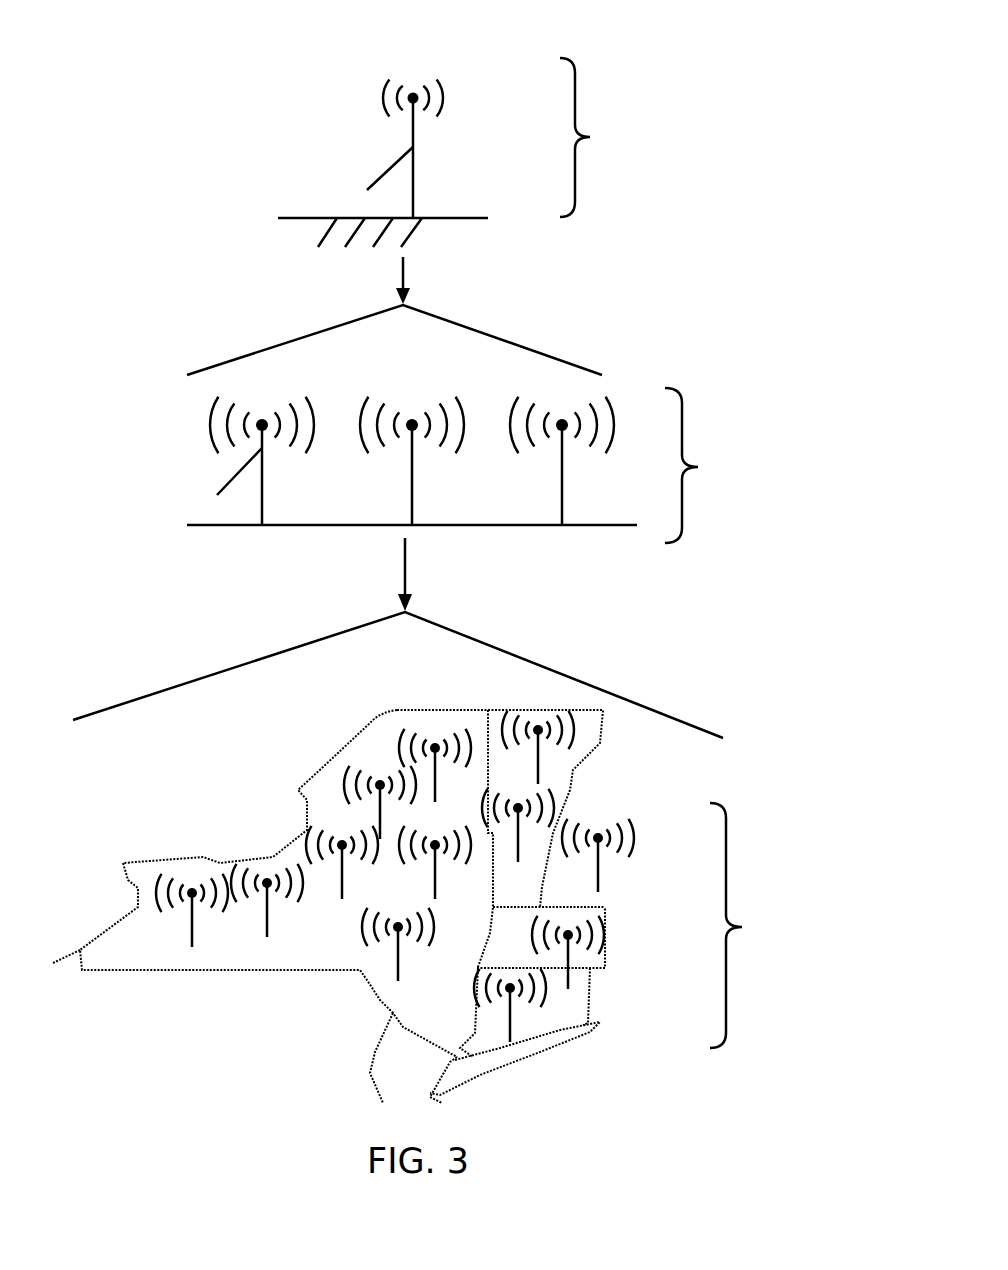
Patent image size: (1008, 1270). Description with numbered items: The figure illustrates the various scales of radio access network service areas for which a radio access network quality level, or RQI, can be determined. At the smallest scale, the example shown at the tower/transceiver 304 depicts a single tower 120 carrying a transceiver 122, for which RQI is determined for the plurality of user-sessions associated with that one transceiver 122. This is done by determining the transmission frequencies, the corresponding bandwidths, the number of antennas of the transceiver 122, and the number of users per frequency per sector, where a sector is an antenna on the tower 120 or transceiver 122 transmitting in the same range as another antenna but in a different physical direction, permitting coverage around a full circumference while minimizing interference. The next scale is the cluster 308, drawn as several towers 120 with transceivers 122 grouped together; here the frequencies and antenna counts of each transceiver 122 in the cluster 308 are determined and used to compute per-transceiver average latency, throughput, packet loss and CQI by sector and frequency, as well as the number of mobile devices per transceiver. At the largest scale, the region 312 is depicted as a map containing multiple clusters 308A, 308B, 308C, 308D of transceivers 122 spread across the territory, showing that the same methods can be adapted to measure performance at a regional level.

The tower 120 is at (357, 196).
The transceiver 122 is at (413, 92).
The tower/transceiver 304 is at (733, 166).
The cluster 308 is at (781, 494).
The cluster 308A is at (214, 850).
The cluster 308B is at (339, 756).
The cluster 308C is at (706, 784).
The cluster 308D is at (616, 1010).
The region 312 is at (816, 952).